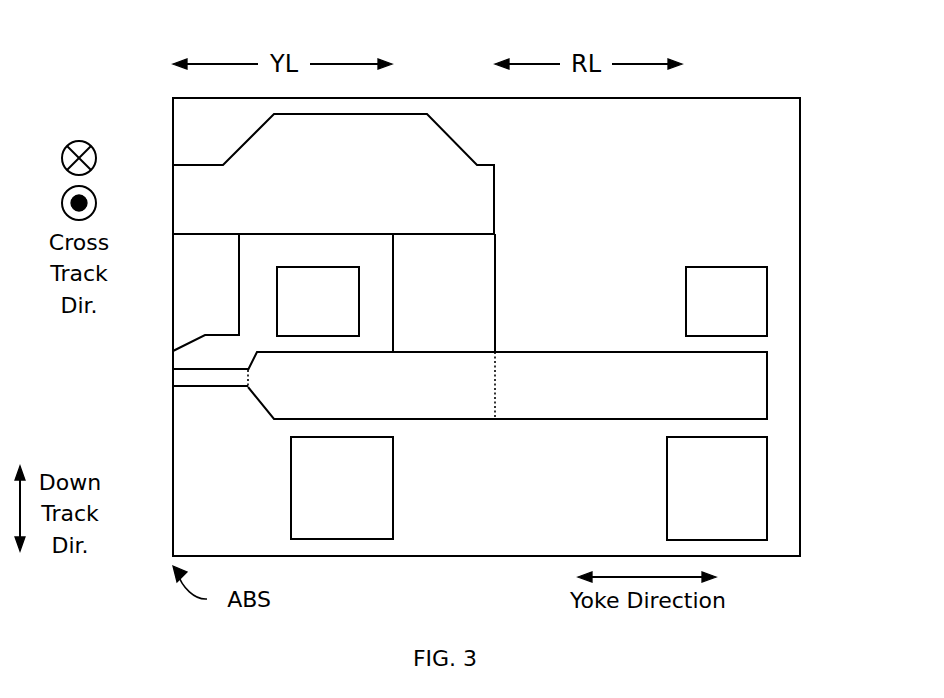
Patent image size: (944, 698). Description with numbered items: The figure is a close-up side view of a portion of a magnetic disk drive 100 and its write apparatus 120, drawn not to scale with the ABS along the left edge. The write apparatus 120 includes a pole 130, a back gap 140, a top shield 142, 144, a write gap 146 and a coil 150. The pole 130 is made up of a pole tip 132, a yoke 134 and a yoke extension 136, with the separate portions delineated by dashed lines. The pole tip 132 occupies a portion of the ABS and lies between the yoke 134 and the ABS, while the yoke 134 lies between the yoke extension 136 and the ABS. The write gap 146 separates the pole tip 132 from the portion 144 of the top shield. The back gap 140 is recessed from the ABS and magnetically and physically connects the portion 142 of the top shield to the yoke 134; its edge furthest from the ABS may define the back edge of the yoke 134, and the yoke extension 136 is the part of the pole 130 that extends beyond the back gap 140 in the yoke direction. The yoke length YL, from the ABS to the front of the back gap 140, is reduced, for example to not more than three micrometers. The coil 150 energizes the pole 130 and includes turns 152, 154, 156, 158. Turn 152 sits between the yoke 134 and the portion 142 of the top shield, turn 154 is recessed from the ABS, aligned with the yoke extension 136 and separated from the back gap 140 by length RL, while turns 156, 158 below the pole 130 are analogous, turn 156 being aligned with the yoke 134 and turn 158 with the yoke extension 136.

The disk drive 100 is at (490, 26).
The write apparatus 120 is at (457, 327).
The portion of top shield 142 is at (333, 174).
The portion of top shield 144 is at (206, 292).
The back gap 140 is at (444, 293).
The turn 152 is at (318, 301).
The turn 154 is at (726, 301).
The turn 156 is at (342, 488).
The turn 158 is at (717, 488).
The coil 150 is at (761, 389).
The pole 130 is at (552, 371).
The yoke 134 is at (371, 385).
The yoke extension 136 is at (631, 385).
The write gap 146 is at (150, 365).
The pole tip 132 is at (191, 387).